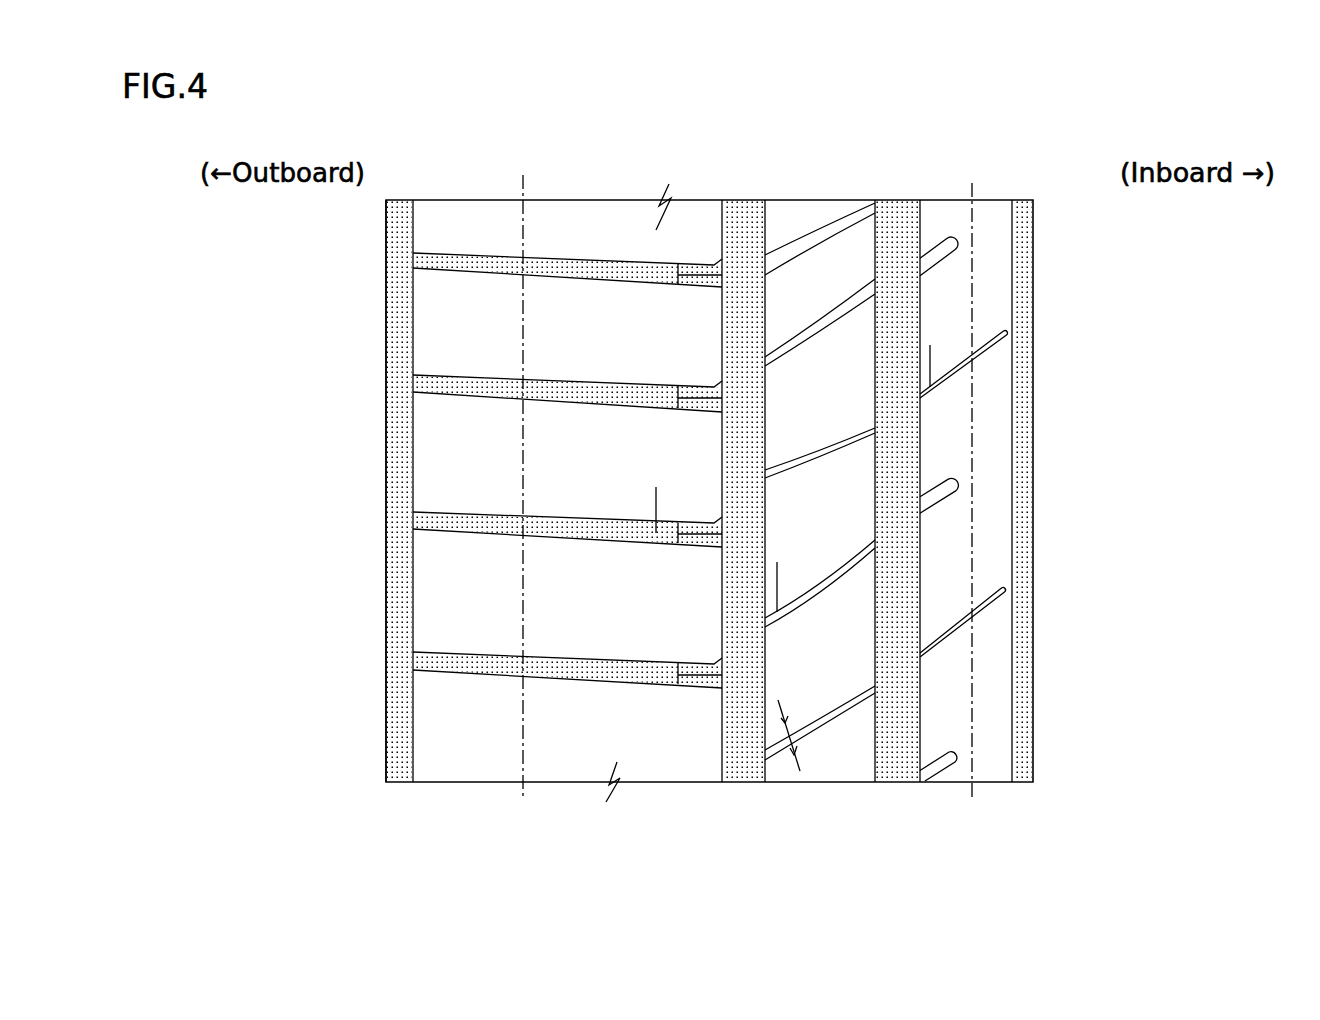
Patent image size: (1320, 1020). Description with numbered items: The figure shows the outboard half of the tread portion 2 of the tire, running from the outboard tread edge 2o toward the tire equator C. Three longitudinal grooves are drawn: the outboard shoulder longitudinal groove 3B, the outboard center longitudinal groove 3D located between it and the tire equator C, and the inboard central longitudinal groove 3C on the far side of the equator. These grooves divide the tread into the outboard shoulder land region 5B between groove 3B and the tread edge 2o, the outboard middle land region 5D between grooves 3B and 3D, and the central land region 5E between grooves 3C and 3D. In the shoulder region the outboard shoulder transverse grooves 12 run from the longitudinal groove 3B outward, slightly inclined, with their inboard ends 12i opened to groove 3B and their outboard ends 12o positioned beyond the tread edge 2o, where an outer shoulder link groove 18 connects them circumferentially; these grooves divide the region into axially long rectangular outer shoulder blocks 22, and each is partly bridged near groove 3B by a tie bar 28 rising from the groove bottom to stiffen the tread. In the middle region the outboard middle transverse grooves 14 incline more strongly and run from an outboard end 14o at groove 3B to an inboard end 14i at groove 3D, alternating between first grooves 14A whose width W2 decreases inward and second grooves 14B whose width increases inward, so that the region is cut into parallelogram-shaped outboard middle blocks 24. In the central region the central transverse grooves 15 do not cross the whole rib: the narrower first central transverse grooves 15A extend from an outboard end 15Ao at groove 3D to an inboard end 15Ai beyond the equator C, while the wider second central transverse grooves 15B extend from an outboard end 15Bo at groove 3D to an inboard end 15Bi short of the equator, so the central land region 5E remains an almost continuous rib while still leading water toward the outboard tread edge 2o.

The tread portion 2 is at (1023, 193).
The outboard tread edge 2o is at (522, 191).
The outboard shoulder longitudinal groove 3B is at (737, 745).
The inboard central longitudinal groove 3C is at (1025, 743).
The outboard center longitudinal groove 3D is at (900, 743).
The outboard shoulder land region 5B is at (577, 240).
The outboard middle land region 5D is at (854, 246).
The central land region 5E is at (997, 238).
The outboard shoulder transverse grooves 12 is at (585, 532).
The outboard ends of the outboard shoulder transverse grooves 12o is at (413, 516).
The inboard ends of the outboard shoulder transverse grooves 12i is at (733, 673).
The outboard middle transverse grooves 14 is at (860, 162).
The first outboard middle transverse grooves 14A is at (800, 470).
The second outboard middle transverse grooves 14B is at (842, 307).
The outboard end of the outboard middle transverse groove 14o is at (765, 488).
The inboard end of the outboard middle transverse groove 14i is at (873, 428).
The central transverse grooves 15 is at (1157, 362).
The first central transverse grooves 15A is at (965, 358).
The inboard end of the first central transverse groove 15Ai is at (1003, 334).
The outboard end of the first central transverse groove 15Ao is at (925, 398).
The second central transverse grooves 15B is at (945, 259).
The inboard end of the second central transverse groove 15Bi is at (962, 240).
The outboard end of the second central transverse groove 15Bo is at (917, 271).
The outer shoulder link groove 18 is at (405, 623).
The outer shoulder blocks 22 is at (641, 320).
The outboard middle blocks 24 is at (835, 344).
The tie bar 28 is at (700, 276).
The tire equator C is at (970, 504).
The width of the transverse grooves W2 is at (806, 735).